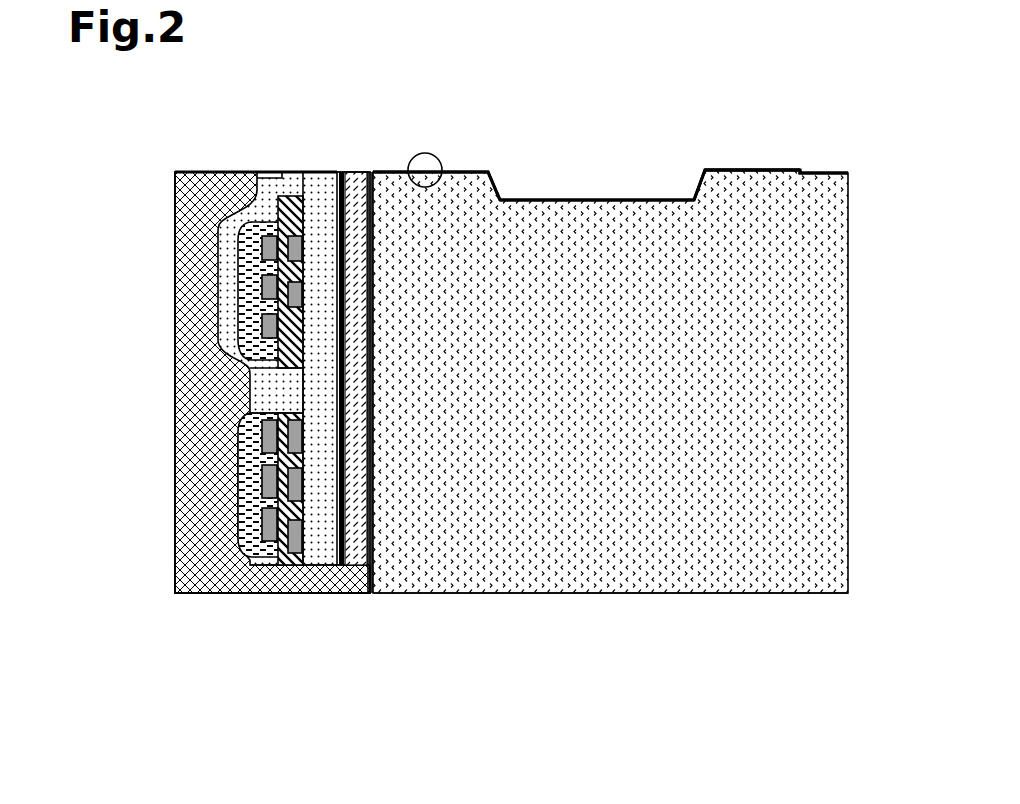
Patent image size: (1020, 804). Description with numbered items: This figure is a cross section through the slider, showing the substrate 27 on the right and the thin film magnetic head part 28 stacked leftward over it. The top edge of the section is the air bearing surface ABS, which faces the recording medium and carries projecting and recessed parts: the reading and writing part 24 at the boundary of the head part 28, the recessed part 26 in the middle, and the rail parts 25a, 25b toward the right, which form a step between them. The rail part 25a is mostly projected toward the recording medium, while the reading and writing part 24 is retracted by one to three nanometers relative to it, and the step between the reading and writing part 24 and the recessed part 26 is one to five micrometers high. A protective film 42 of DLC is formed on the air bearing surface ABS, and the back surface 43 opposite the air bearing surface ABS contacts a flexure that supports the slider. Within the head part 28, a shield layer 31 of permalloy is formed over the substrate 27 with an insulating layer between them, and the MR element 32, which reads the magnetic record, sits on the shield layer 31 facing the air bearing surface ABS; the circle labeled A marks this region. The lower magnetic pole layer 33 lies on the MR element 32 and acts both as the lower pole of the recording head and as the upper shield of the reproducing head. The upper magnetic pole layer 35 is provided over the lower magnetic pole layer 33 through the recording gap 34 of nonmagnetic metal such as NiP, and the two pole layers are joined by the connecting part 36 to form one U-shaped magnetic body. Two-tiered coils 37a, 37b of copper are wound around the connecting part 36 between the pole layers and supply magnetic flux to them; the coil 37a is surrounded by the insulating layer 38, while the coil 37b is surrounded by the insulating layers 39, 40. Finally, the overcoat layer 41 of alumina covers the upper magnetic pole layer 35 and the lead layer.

The reading and writing part 24 is at (477, 172).
The rail part 25a is at (744, 170).
The rail part 25b is at (832, 173).
The recessed part 26 is at (646, 200).
The substrate 27 is at (842, 685).
The thin film magnetic head part 28 is at (172, 685).
The shield layer 31 is at (352, 593).
The MR element 32 is at (345, 170).
The lower magnetic pole layer 33 is at (328, 172).
The recording gap 34 is at (302, 172).
The upper magnetic pole layer 35 is at (255, 172).
The connecting part 36 is at (268, 384).
The coil 37a is at (262, 252).
The coil 37b is at (268, 330).
The insulating layer 38 is at (262, 222).
The insulating layer 39 is at (276, 300).
The insulating layer 40 is at (258, 482).
The overcoat layer 41 is at (175, 572).
The protective film 42 is at (174, 172).
The back surface 43 is at (660, 594).
The enlarged region A is at (442, 152).
The air bearing surface ABS is at (708, 170).